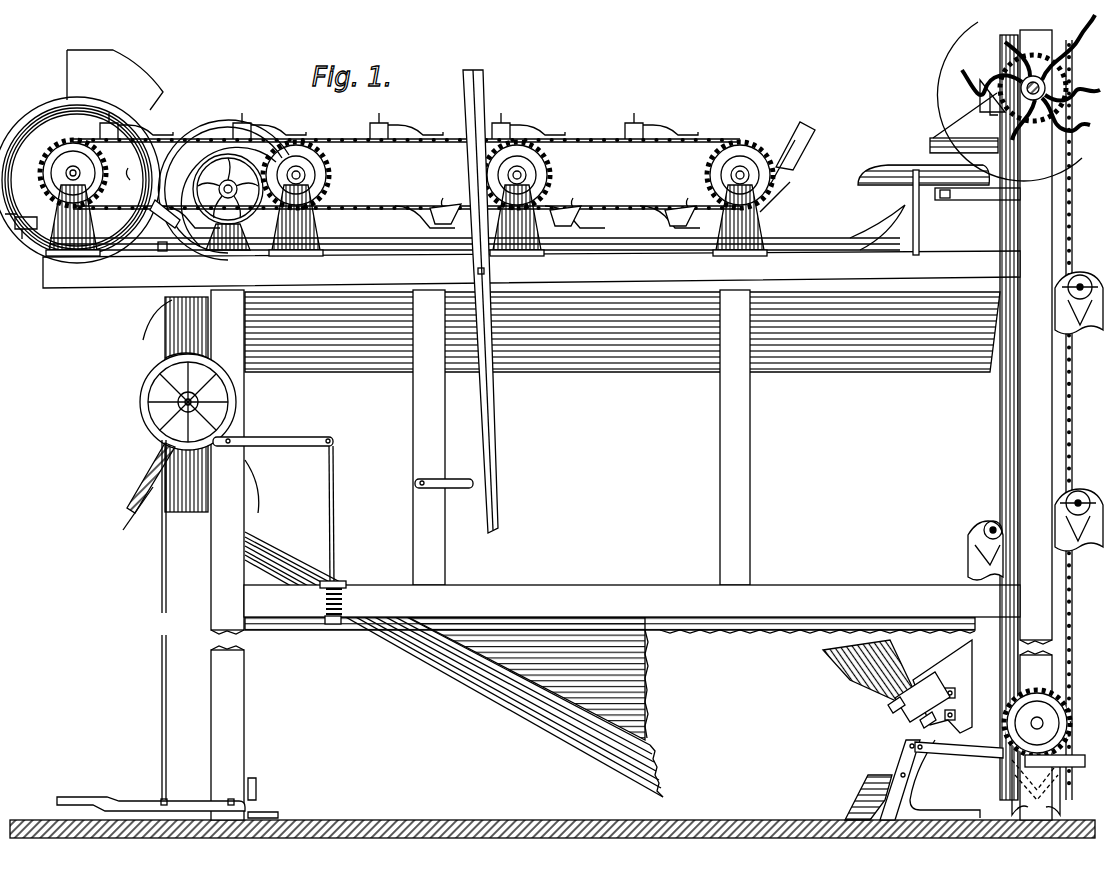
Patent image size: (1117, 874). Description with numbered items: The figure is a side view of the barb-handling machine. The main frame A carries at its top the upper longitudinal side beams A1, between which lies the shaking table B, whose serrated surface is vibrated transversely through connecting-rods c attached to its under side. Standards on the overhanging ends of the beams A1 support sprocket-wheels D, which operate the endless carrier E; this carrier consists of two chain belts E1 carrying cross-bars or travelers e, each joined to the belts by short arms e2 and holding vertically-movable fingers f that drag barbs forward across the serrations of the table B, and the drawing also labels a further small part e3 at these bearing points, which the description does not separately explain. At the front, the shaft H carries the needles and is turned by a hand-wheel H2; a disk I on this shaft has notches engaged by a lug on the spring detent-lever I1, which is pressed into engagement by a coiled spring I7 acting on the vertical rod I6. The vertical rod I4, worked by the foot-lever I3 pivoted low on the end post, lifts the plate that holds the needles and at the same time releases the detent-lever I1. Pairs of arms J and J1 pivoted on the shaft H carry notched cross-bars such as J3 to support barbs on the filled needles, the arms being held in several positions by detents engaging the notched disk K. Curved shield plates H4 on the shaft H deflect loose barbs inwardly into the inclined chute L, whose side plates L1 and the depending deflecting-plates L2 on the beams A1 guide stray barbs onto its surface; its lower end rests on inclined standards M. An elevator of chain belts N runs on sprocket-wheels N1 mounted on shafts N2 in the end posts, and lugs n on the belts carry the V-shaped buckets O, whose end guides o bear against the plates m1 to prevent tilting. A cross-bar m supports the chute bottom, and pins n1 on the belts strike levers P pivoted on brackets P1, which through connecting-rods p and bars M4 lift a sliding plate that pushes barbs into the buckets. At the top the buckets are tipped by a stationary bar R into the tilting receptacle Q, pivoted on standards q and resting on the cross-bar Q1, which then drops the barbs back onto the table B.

The main frame A is at (631, 425).
The upper longitudinal side beams A1 is at (531, 269).
The shaking tray or table B is at (477, 227).
The sprocket-wheels D is at (81, 156).
The endless-belt carrier E is at (406, 174).
The chain belts E1 is at (518, 198).
The disk K is at (223, 190).
The cross-bars or travelers e is at (450, 141).
The short arms e2 is at (412, 171).
The bearing pin e3 is at (112, 120).
The fingers f is at (486, 151).
The connecting-rods c is at (428, 217).
The inclined chute L is at (498, 690).
The inwardly-inclined plates L1 is at (600, 672).
The deflecting-plates L2 is at (575, 352).
The shaft H is at (142, 396).
The hand-wheel H2 is at (144, 412).
The curved shield plates H4 is at (143, 341).
The disk I is at (238, 405).
The spring detent-lever I1 is at (283, 440).
The foot-lever I3 is at (147, 805).
The vertical rod I4 is at (172, 620).
The vertical rod I6 is at (339, 515).
The coiled spring I7 is at (342, 597).
The arms J is at (208, 345).
The arms J1 is at (145, 464).
The cross-bar J3 is at (131, 516).
The tilting receptacle Q is at (918, 170).
The cross-bar Q1 is at (945, 198).
The vertical standards q is at (920, 225).
The stationary bar R is at (940, 135).
The elevator-buckets O is at (1000, 70).
The chain belts N is at (1000, 437).
The sprocket-wheels N1 is at (1050, 70).
The shafts N2 is at (1036, 108).
The lugs or arms n is at (1080, 280).
The pins n1 is at (990, 524).
The vertical guides o is at (966, 558).
The cross-bar m is at (919, 700).
The plates m1 is at (942, 686).
The inclined standards M is at (930, 780).
The bars and stop block M4 is at (868, 797).
The levers P is at (970, 756).
The brackets P1 is at (1070, 768).
The connecting-rods p is at (898, 758).